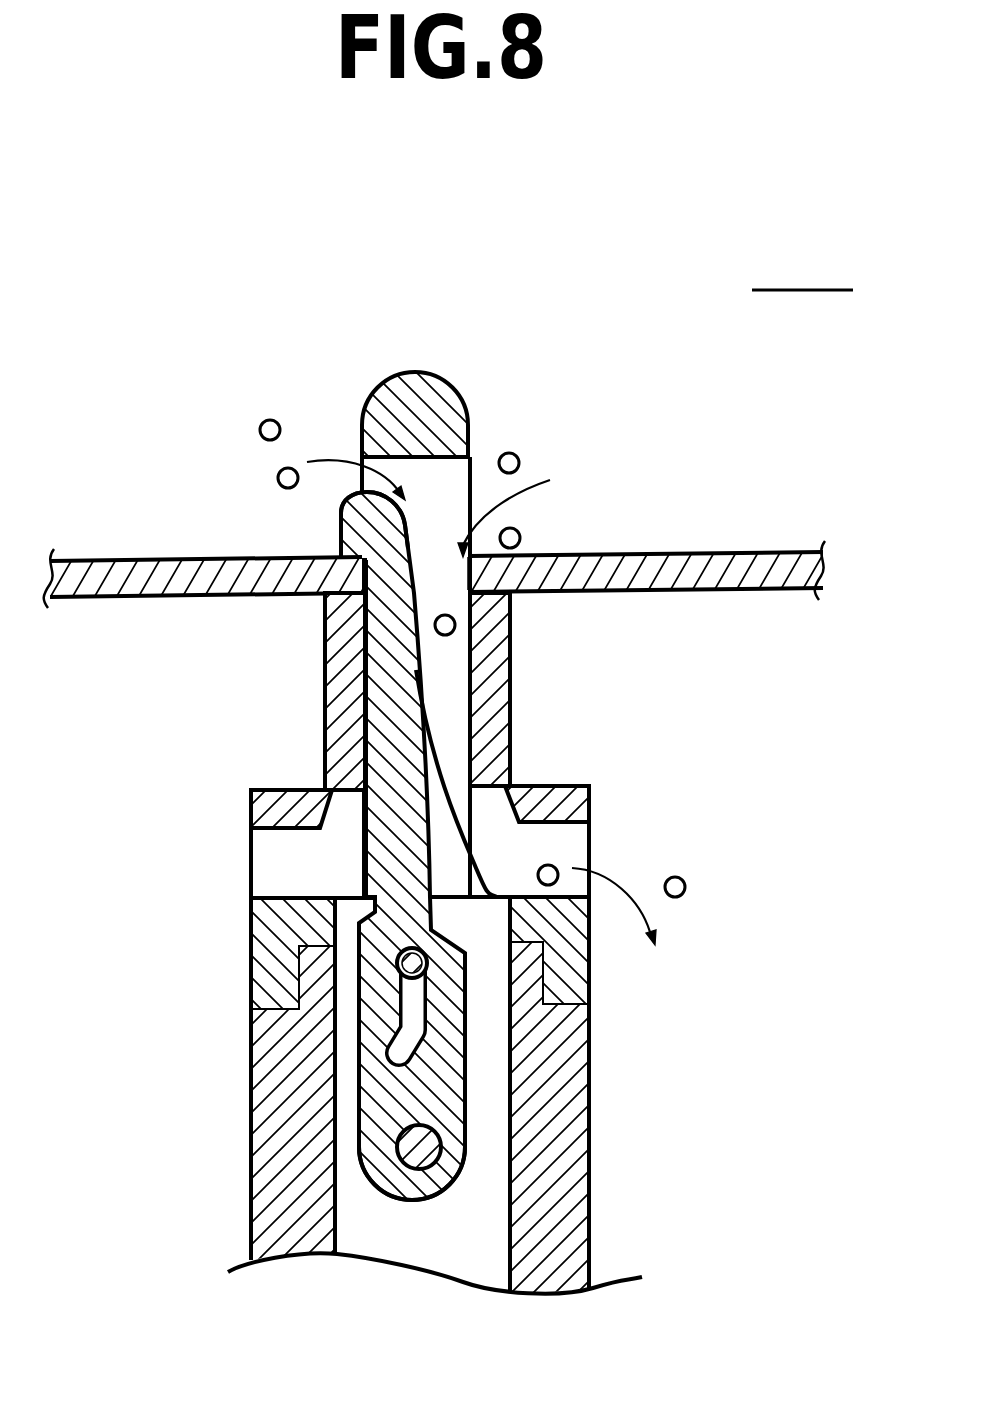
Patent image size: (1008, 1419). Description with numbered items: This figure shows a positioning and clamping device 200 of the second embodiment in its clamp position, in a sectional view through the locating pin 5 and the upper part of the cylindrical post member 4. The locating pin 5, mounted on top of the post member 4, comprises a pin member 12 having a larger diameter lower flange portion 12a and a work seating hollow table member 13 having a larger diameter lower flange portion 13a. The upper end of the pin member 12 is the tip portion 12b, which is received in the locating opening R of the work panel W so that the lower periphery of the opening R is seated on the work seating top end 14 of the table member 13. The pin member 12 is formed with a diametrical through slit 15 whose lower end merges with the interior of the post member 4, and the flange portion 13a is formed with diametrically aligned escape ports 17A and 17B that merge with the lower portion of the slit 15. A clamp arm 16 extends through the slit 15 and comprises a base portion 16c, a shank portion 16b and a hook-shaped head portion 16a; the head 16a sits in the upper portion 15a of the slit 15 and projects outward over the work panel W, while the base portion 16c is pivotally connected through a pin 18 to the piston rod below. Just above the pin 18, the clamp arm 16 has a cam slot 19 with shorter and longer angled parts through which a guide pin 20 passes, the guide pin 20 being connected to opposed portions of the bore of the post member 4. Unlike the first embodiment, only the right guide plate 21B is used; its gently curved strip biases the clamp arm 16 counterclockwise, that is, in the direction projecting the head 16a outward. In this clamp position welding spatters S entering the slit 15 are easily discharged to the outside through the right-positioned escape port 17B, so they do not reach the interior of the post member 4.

The positioning and clamping device 200 is at (802, 266).
The cylindrical post member 4 is at (242, 1105).
The locating pin 5 is at (524, 643).
The pin member 12 is at (442, 380).
The lower flange portion 12a is at (570, 972).
The nozzle tip portion 12b is at (395, 403).
The work seating hollow table member 13 is at (314, 698).
The lower flange portion 13a is at (251, 808).
The work seating top end 14 is at (493, 578).
The through slit 15 is at (450, 700).
The upper portion of slit 15a is at (448, 485).
The clamp arm 16 is at (350, 1115).
The hook-shaped head portion 16a is at (368, 522).
The shank portion 16b is at (378, 733).
The base portion 16c is at (440, 1095).
The escape port 17A is at (267, 877).
The escape port 17B is at (560, 846).
The pin 18 is at (440, 1145).
The cam slot 19 is at (405, 1010).
The guide pin 20 is at (397, 963).
The right guide plate 21B is at (463, 827).
The locating opening R is at (338, 626).
The spatters S is at (259, 430).
The work panel W is at (717, 568).